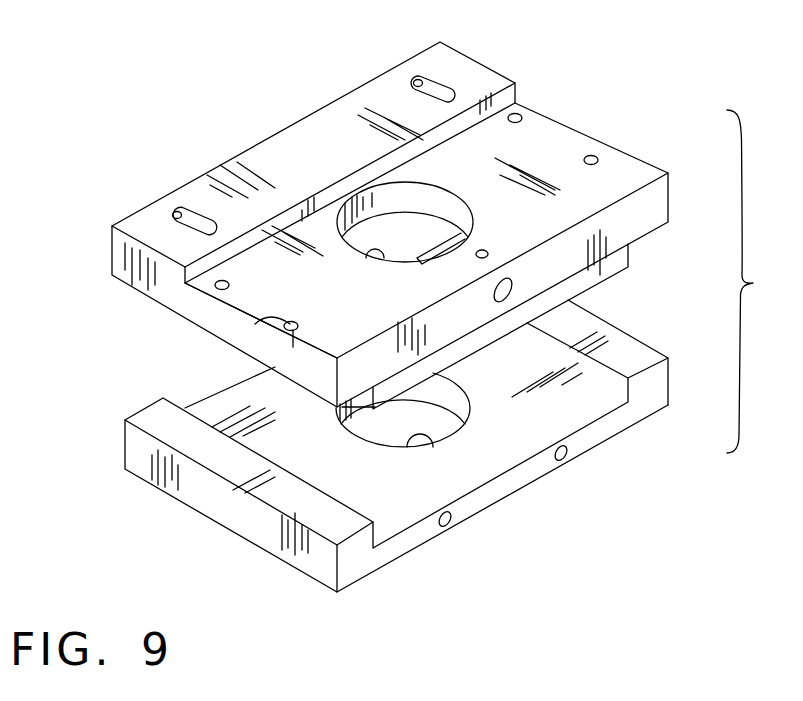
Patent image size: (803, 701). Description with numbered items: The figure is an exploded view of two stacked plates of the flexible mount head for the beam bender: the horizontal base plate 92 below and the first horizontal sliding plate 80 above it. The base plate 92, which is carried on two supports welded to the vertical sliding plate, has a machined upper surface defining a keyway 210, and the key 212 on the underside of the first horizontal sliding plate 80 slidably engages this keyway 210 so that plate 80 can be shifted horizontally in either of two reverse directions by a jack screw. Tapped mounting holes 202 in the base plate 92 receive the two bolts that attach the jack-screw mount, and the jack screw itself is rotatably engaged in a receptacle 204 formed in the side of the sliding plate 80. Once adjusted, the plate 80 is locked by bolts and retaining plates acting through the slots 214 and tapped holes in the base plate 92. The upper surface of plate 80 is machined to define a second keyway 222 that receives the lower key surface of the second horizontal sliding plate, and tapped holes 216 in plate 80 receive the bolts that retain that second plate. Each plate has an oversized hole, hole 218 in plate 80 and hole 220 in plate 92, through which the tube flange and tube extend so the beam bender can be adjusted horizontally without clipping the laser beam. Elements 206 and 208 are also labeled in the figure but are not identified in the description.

The first horizontal sliding plate 80 is at (640, 170).
The horizontal base plate 92 is at (668, 378).
The tapped mounting holes 202 is at (567, 460).
The receptacle 204 is at (500, 303).
The small hole 206 is at (489, 253).
The lower edge 208 is at (412, 546).
The keyway 210 is at (510, 450).
The key 212 is at (618, 250).
The slots 214 is at (175, 212).
The tapped holes 216 is at (518, 113).
The oversized hole 218 is at (365, 262).
The oversized hole 220 is at (436, 445).
The keyway 222 is at (560, 133).